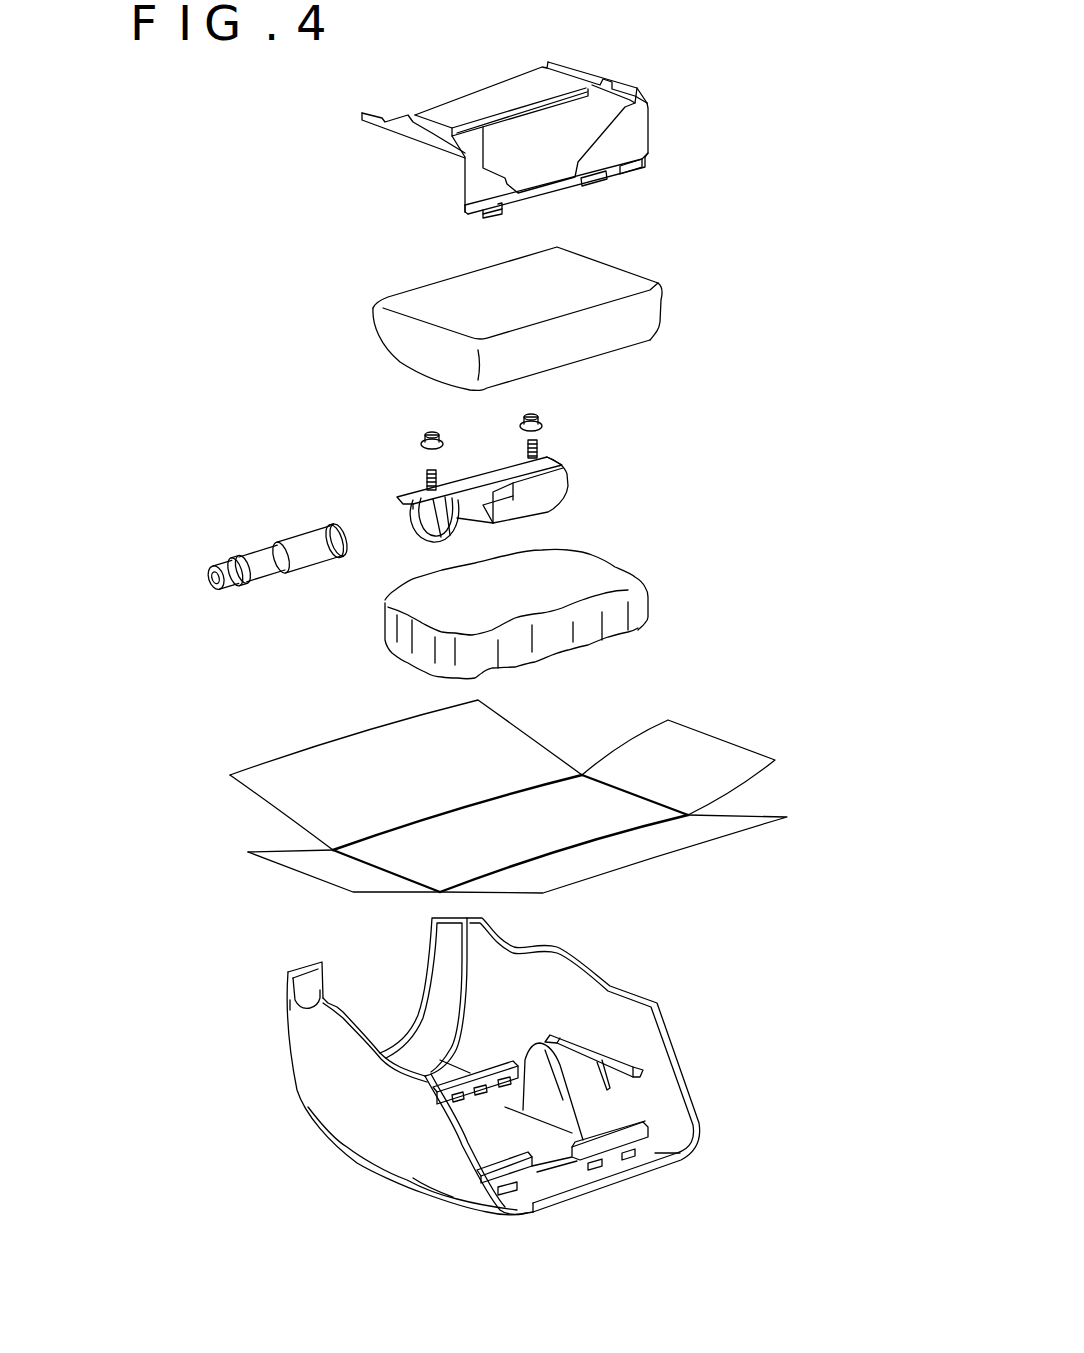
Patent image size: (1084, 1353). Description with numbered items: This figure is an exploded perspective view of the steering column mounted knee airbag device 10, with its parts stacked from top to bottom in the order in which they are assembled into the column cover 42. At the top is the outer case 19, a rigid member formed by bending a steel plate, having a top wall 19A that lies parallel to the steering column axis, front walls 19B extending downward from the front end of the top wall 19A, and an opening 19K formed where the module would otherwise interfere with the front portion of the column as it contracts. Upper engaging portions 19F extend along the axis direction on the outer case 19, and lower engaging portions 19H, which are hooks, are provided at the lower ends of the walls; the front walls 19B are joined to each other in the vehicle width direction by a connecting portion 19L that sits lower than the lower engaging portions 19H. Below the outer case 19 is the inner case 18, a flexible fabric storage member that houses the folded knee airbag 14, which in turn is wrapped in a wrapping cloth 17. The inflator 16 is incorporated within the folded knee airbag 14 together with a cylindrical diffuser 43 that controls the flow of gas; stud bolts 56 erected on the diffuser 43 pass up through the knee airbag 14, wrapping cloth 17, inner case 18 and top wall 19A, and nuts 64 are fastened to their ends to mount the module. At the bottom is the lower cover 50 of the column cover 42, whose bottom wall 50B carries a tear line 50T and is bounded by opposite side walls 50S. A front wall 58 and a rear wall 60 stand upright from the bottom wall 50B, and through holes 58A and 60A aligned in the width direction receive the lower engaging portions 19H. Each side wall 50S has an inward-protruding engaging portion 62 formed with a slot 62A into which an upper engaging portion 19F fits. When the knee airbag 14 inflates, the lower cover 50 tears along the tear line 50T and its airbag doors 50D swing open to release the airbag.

The knee airbag device 10 is at (718, 75).
The knee airbag 14 is at (628, 577).
The inflator 16 is at (268, 546).
The wrapping cloth 17 is at (732, 742).
The inner case 18 is at (662, 300).
The outer case 19 is at (485, 91).
The top wall 19A is at (518, 88).
The front wall 19B is at (642, 136).
The upper engaging portion 19F is at (593, 65).
The lower engaging portion 19H is at (500, 213).
The opening 19K is at (560, 153).
The connecting portion 19L is at (547, 193).
The column cover 42 is at (674, 961).
The diffuser 43 is at (570, 487).
The lower cover 50 is at (578, 972).
The bottom wall 50B is at (580, 1190).
The airbag door 50D is at (582, 1078).
The side wall 50S is at (672, 1062).
The tear line 50T is at (527, 1052).
The stud bolt 56 is at (546, 452).
The front wall 58 is at (625, 1122).
The through hole 58A is at (507, 1193).
The rear wall 60 is at (492, 1062).
The through hole 60A is at (458, 1101).
The engaging portion 62 is at (627, 1078).
The slot 62A is at (615, 1055).
The nut 64 is at (548, 420).